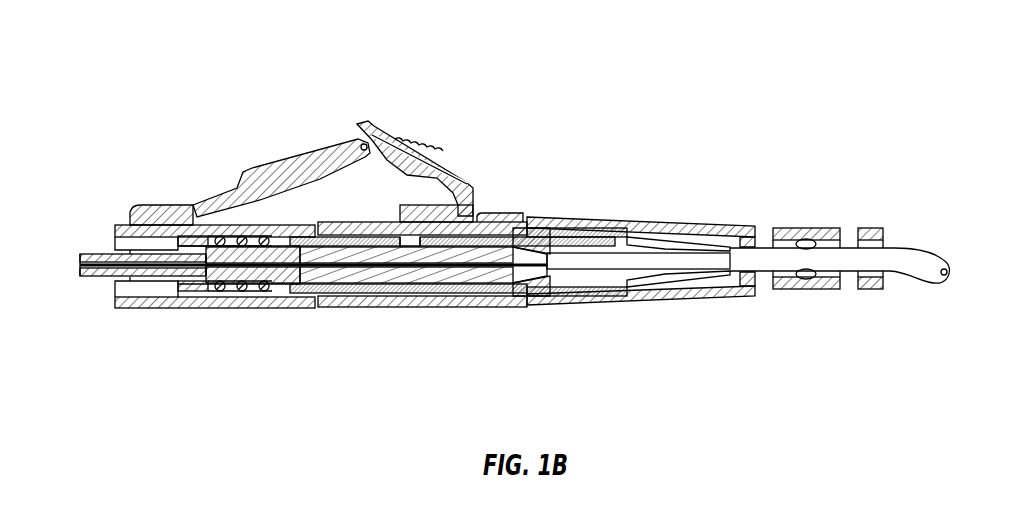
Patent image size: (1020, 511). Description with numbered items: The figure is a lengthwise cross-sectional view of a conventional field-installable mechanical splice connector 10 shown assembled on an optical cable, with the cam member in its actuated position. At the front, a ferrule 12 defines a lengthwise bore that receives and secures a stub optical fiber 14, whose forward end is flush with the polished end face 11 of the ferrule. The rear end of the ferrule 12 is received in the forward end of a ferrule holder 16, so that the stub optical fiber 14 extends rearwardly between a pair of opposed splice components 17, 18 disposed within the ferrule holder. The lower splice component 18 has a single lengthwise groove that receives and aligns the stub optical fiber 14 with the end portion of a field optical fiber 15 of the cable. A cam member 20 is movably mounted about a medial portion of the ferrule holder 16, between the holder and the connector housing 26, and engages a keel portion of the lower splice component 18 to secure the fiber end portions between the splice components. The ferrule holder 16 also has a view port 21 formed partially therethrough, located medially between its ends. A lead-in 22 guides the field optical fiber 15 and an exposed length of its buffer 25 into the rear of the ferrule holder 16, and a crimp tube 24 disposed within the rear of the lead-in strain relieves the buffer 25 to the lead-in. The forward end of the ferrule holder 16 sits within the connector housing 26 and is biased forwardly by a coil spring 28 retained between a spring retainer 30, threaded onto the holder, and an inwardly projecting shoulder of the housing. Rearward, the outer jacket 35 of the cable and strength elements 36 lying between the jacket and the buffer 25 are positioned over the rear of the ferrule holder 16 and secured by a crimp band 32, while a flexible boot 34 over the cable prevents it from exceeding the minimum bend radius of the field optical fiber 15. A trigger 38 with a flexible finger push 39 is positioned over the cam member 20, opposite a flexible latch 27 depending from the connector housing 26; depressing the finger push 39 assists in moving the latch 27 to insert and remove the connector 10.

The mechanical splice connector 10 is at (285, 60).
The end face 11 is at (82, 277).
The ferrule 12 is at (102, 277).
The stub optical fiber 14 is at (400, 282).
The field optical fiber 15 is at (436, 284).
The ferrule holder 16 is at (297, 306).
The upper splice component 17 is at (497, 246).
The lower splice component 18 is at (367, 296).
The cam member 20 is at (490, 308).
The view port 21 is at (413, 243).
The lead-in 22 is at (597, 296).
The crimp tube 24 is at (653, 250).
The buffer 25 is at (573, 264).
The connector housing 26 is at (127, 223).
The latch 27 is at (273, 160).
The coil spring 28 is at (238, 292).
The spring retainer 30 is at (148, 205).
The crimp band 32 is at (610, 240).
The boot 34 is at (640, 298).
The outer jacket 35 is at (912, 247).
The strength elements 36 is at (738, 222).
The trigger 38 is at (478, 207).
The finger push 39 is at (433, 212).